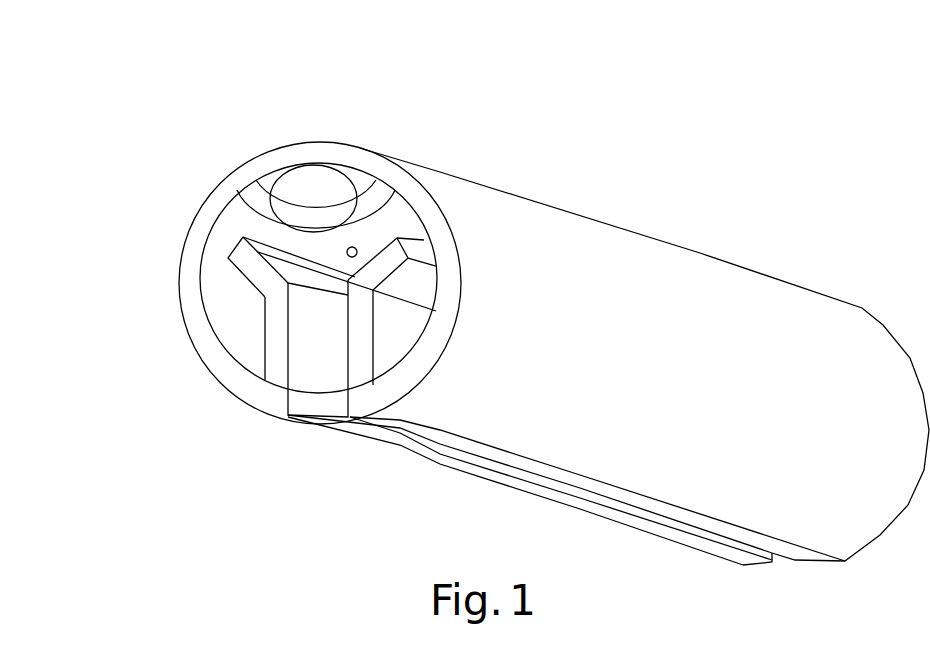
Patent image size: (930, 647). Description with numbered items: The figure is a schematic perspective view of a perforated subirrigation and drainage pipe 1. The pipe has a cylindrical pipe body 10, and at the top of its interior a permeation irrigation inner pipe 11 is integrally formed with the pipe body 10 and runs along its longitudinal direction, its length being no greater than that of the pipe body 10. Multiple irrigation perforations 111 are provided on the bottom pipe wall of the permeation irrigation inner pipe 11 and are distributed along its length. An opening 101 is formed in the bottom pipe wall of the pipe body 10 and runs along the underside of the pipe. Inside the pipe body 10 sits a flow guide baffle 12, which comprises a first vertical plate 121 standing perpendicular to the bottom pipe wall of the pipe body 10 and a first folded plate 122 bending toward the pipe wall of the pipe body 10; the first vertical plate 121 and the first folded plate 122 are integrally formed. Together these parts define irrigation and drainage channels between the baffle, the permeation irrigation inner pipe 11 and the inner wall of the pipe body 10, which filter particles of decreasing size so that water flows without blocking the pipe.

The perforated subirrigation and drainage pipe 1 is at (482, 153).
The pipe body 10 is at (745, 310).
The opening 101 is at (440, 450).
The permeation irrigation inner pipe 11 is at (257, 190).
The irrigation perforations 111 is at (352, 247).
The flow guide baffle 12 is at (230, 335).
The first vertical plate 121 is at (275, 362).
The first folded plate 122 is at (252, 268).